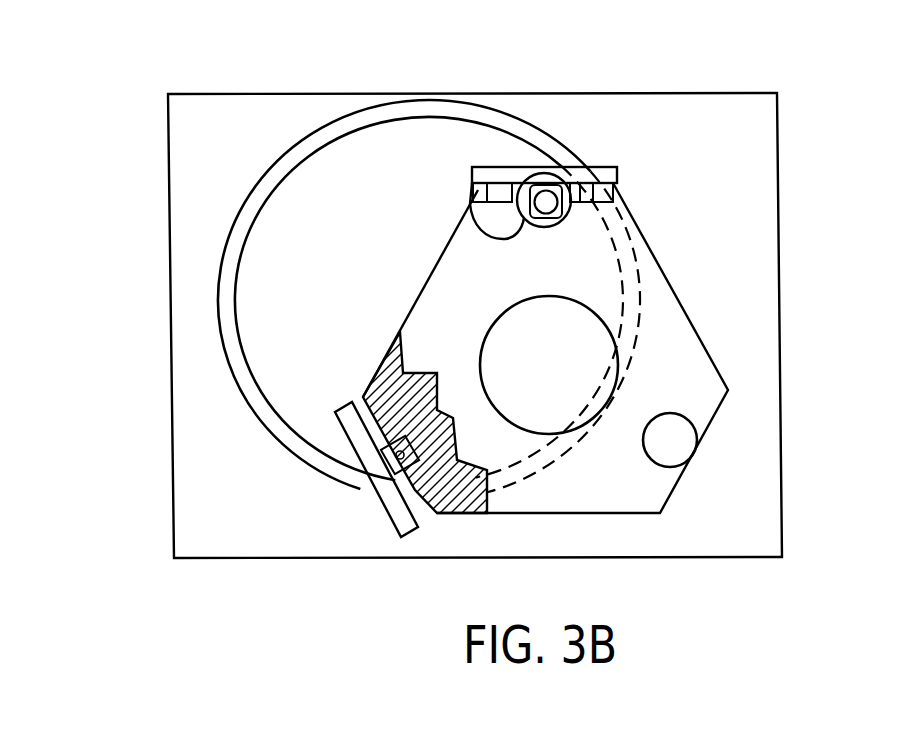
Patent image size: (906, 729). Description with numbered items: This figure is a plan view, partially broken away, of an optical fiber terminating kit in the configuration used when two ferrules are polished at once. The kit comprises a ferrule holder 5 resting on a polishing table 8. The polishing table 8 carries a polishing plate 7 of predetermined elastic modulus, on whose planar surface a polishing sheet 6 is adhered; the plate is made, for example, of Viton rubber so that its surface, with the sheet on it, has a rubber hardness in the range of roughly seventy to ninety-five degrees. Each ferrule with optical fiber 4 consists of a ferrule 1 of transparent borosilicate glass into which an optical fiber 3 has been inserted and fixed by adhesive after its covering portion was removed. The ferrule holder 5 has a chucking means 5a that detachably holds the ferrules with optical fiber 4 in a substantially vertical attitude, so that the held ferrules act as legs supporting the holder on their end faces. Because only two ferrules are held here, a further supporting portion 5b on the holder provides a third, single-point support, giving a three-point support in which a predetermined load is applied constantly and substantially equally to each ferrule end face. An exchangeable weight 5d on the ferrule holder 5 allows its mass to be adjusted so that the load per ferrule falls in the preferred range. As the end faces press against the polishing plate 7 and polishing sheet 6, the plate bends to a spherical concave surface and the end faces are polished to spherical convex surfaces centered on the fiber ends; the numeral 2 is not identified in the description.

The ferrule 1 is at (503, 240).
The second member 2 is at (471, 193).
The optical fiber 3 is at (420, 507).
The ferrule with optical fiber 4 is at (398, 476).
The ferrule holder 5 is at (638, 218).
The chucking means 5a is at (343, 415).
The supporting portion 5b is at (673, 442).
The exchangeable weight 5d is at (503, 357).
The polishing sheet 6 is at (393, 170).
The polishing plate 7 is at (429, 298).
The polishing table 8 is at (727, 130).